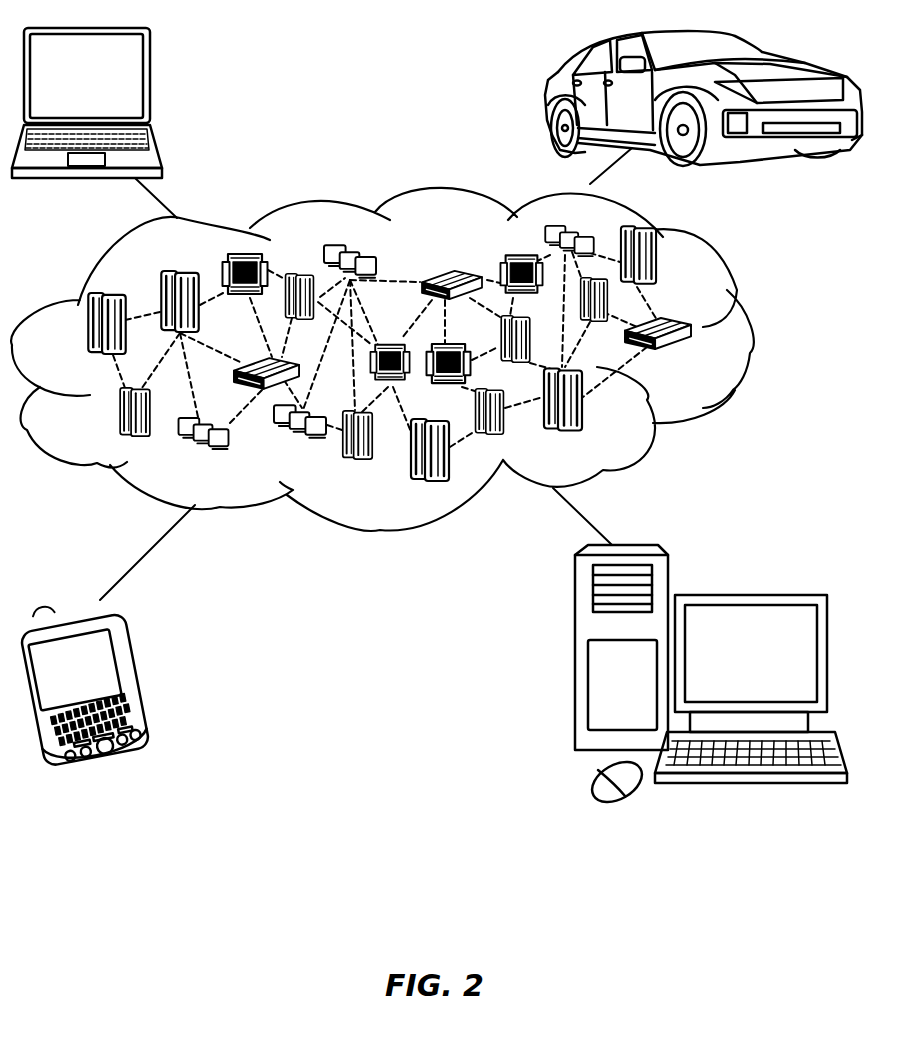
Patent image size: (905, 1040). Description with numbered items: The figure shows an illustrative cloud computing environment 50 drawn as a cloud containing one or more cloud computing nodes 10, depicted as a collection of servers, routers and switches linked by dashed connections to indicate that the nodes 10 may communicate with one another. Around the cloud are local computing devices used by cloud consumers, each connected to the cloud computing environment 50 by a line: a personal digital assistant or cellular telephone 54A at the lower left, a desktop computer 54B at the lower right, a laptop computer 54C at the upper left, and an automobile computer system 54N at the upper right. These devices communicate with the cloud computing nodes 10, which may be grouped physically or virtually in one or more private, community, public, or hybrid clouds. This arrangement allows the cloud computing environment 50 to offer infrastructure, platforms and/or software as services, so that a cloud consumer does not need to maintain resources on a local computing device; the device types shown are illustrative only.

The cloud computing nodes 10 is at (696, 361).
The cloud computing environment 50 is at (748, 333).
The personal digital assistant or cellular telephone 54A is at (142, 680).
The desktop computer 54B is at (745, 595).
The laptop computer 54C is at (152, 82).
The automobile computer system 54N is at (548, 98).